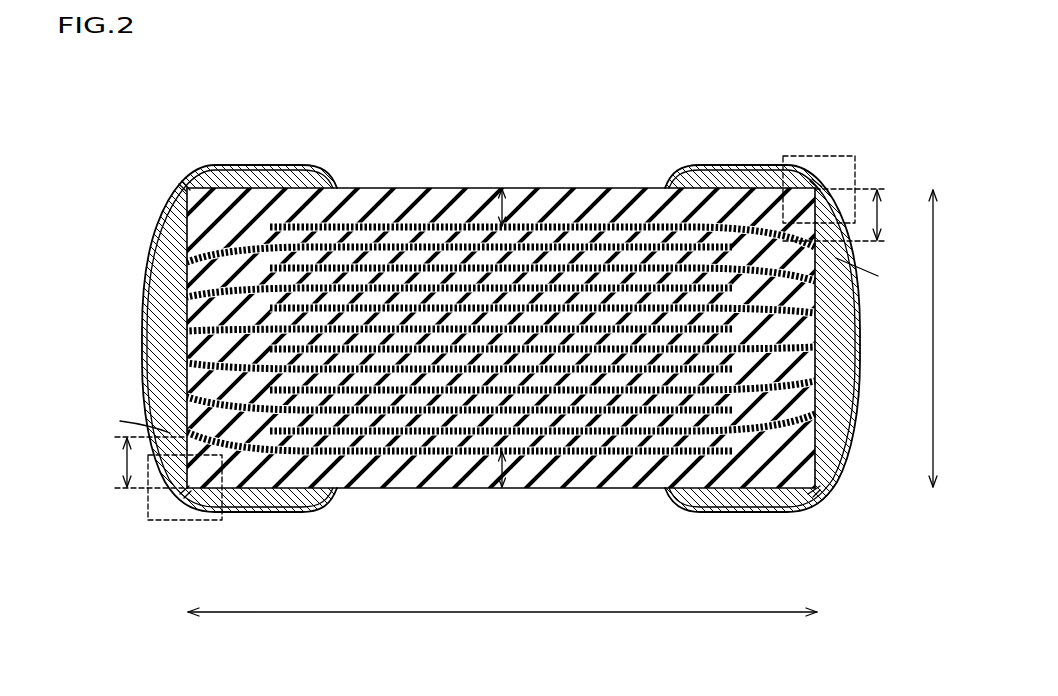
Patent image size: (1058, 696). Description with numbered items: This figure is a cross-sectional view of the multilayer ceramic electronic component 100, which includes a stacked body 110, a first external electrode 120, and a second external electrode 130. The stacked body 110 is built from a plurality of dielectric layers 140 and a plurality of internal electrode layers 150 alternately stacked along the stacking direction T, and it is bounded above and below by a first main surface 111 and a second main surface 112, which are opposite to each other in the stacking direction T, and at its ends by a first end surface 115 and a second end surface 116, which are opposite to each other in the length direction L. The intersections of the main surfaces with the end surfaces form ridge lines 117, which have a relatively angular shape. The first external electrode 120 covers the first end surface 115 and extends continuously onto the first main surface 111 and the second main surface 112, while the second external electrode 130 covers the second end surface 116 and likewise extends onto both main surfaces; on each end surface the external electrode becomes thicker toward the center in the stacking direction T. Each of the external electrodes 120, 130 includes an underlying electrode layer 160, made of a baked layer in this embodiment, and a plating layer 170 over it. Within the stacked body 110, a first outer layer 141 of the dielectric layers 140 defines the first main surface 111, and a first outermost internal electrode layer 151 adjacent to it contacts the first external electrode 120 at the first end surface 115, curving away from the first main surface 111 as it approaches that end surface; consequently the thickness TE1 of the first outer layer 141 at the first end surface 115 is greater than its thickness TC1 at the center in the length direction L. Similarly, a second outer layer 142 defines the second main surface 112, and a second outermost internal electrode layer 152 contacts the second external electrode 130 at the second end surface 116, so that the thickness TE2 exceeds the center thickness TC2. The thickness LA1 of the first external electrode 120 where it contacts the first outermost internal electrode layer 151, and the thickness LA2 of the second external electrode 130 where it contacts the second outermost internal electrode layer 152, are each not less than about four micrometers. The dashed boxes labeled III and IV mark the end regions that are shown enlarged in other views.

The multilayer ceramic electronic component 100 is at (860, 112).
The stacked body 110 is at (642, 188).
The first main surface 111 is at (432, 186).
The second main surface 112 is at (634, 490).
The first end surface 115 is at (838, 332).
The second end surface 116 is at (187, 348).
The ridge lines 117 is at (185, 187).
The first external electrode 120 is at (935, 523).
The second external electrode 130 is at (163, 156).
The dielectric layers 140 is at (374, 237).
The first outer layer 141 is at (572, 213).
The second outer layer 142 is at (568, 464).
The internal electrode layers 150 is at (462, 561).
The first outermost internal electrode layer 151 is at (392, 228).
The second outermost internal electrode layer 152 is at (442, 250).
The underlying electrode layer 160 is at (145, 265).
The plating layer 170 is at (150, 222).
The thickness of first outer layer at center TC1 is at (504, 207).
The thickness of second outer layer at center TC2 is at (505, 470).
The thickness of first outer layer at first end surface TE1 is at (851, 215).
The thickness of second outer layer at second end surface TE2 is at (133, 462).
The thickness of first external electrode in contact with first outermost internal e LA1 is at (876, 272).
The thickness of second external electrode in contact with second outermost internal LA2 is at (125, 420).
The stacking direction T is at (921, 338).
The length direction L is at (502, 625).
The section III is at (813, 150).
The section IV is at (177, 521).